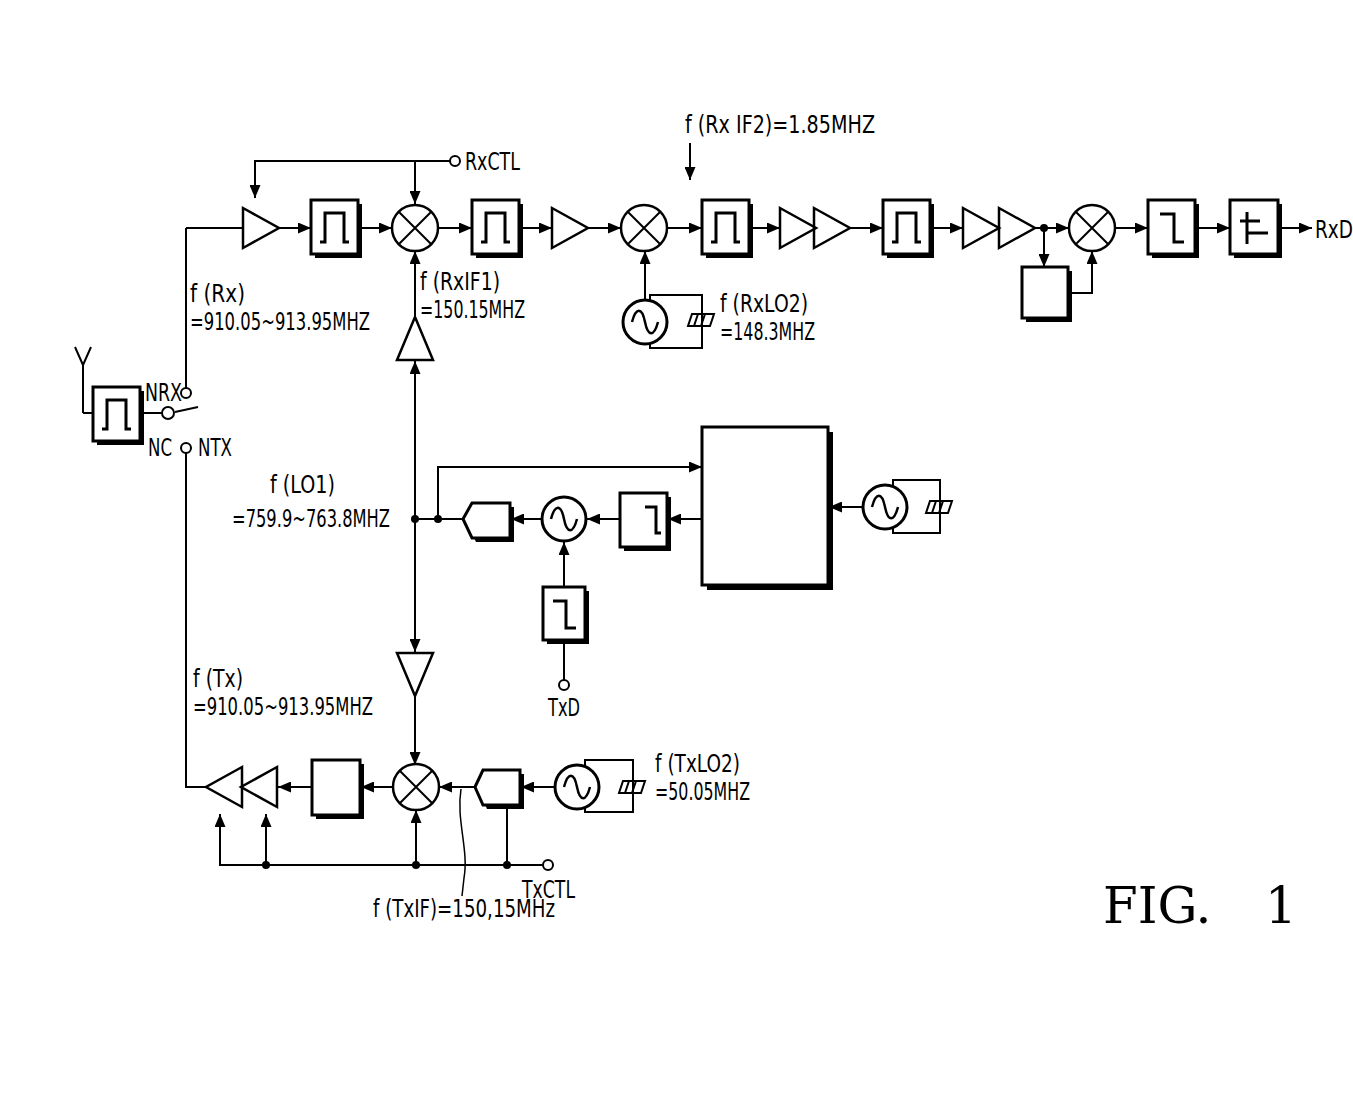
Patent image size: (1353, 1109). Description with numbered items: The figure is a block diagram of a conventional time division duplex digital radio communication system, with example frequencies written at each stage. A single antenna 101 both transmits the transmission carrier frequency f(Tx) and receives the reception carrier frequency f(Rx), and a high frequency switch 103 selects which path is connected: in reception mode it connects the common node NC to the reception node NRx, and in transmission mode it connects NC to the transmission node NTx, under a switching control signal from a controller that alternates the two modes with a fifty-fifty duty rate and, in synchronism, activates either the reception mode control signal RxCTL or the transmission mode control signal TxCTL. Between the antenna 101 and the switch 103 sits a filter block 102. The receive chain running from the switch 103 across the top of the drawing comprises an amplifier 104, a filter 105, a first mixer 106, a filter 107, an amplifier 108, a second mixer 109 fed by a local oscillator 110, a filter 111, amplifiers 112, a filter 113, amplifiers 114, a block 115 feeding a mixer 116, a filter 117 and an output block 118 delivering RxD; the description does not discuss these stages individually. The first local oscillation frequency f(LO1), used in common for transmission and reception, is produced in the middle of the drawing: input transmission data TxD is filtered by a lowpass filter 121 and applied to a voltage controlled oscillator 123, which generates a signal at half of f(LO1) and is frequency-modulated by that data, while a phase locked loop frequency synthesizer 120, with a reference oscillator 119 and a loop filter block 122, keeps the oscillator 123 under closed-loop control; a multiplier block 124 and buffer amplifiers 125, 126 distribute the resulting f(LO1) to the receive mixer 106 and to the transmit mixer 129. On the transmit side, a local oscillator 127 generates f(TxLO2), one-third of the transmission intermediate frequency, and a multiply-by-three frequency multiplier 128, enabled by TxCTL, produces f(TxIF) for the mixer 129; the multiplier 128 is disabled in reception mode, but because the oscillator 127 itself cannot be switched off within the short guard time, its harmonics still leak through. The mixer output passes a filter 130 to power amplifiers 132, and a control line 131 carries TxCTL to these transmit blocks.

The antenna 101 is at (83, 370).
The band-pass filter 102 is at (117, 387).
The high frequency switch 103 is at (218, 400).
The low noise amplifier 104 is at (243, 212).
The band-pass filter 105 is at (333, 258).
The first mixer 106 is at (400, 210).
The band-pass filter 107 is at (518, 252).
The IF amplifier 108 is at (561, 208).
The second mixer 109 is at (628, 210).
The second local oscillator 110 is at (622, 322).
The band-pass filter 111 is at (724, 200).
The amplifier 112 is at (795, 210).
The band-pass filter 113 is at (907, 200).
The limiter amplifier 114 is at (978, 210).
The 90 degree phase shifter 115 is at (1022, 293).
The demodulating mixer 116 is at (1077, 210).
The low-pass filter 117 is at (1172, 200).
The comparator 118 is at (1253, 200).
The reference oscillator 119 is at (882, 485).
The phase locked loop frequency synthesizer 120 is at (770, 590).
The lowpass filter 121 is at (585, 627).
The loop filter 122 is at (648, 550).
The voltage controlled oscillator 123 is at (551, 541).
The frequency doubler 124 is at (478, 542).
The buffer amplifier 125 is at (398, 346).
The buffer amplifier 126 is at (402, 655).
The local oscillator 127 is at (566, 768).
The x3 frequency multiplier 128 is at (500, 770).
The transmit mixer 129 is at (402, 768).
The band-pass filter 130 is at (330, 760).
The transmit control line 131 is at (340, 817).
The power amplifier 132 is at (221, 770).